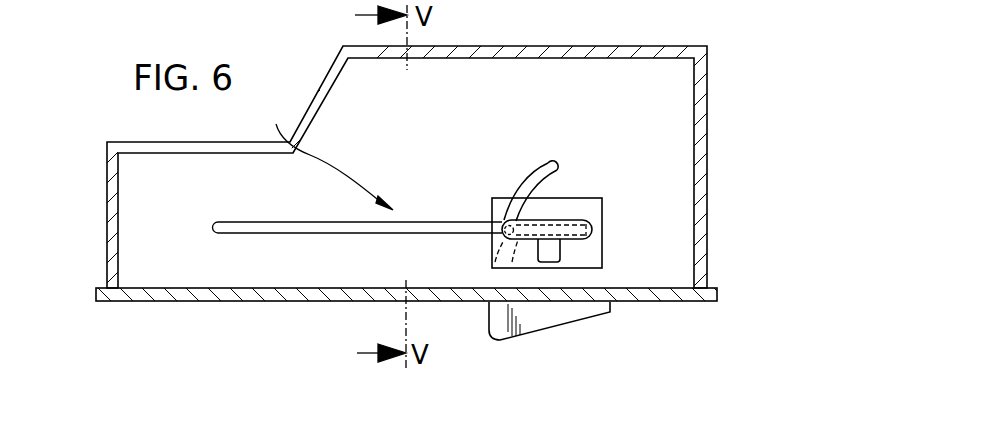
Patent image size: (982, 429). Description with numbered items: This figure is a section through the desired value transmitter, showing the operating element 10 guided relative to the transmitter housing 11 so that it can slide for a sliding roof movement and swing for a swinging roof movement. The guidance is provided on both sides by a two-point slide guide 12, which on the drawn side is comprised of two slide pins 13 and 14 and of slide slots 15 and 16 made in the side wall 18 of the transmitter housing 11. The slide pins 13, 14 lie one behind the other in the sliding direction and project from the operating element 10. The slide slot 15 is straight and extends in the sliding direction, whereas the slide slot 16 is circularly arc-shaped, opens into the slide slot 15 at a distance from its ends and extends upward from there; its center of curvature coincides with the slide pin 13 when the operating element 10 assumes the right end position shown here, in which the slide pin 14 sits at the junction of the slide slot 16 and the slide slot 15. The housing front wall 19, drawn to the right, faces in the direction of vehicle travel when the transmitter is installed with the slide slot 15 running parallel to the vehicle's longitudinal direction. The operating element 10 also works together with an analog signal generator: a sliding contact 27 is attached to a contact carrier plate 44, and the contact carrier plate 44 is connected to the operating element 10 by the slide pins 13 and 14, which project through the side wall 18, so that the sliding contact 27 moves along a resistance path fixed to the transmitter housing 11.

The operating element 10 is at (503, 327).
The transmitter housing 11 is at (321, 91).
The two-point slide guide 12 is at (328, 156).
The slide pin 13 is at (592, 234).
The slide pin 14 is at (495, 262).
The slide slot 15 is at (286, 230).
The slide slot 16 is at (532, 182).
The side wall 18 is at (112, 210).
The housing front wall 19 is at (702, 100).
The sliding contact 27 is at (550, 254).
The contact carrier plate 44 is at (587, 255).